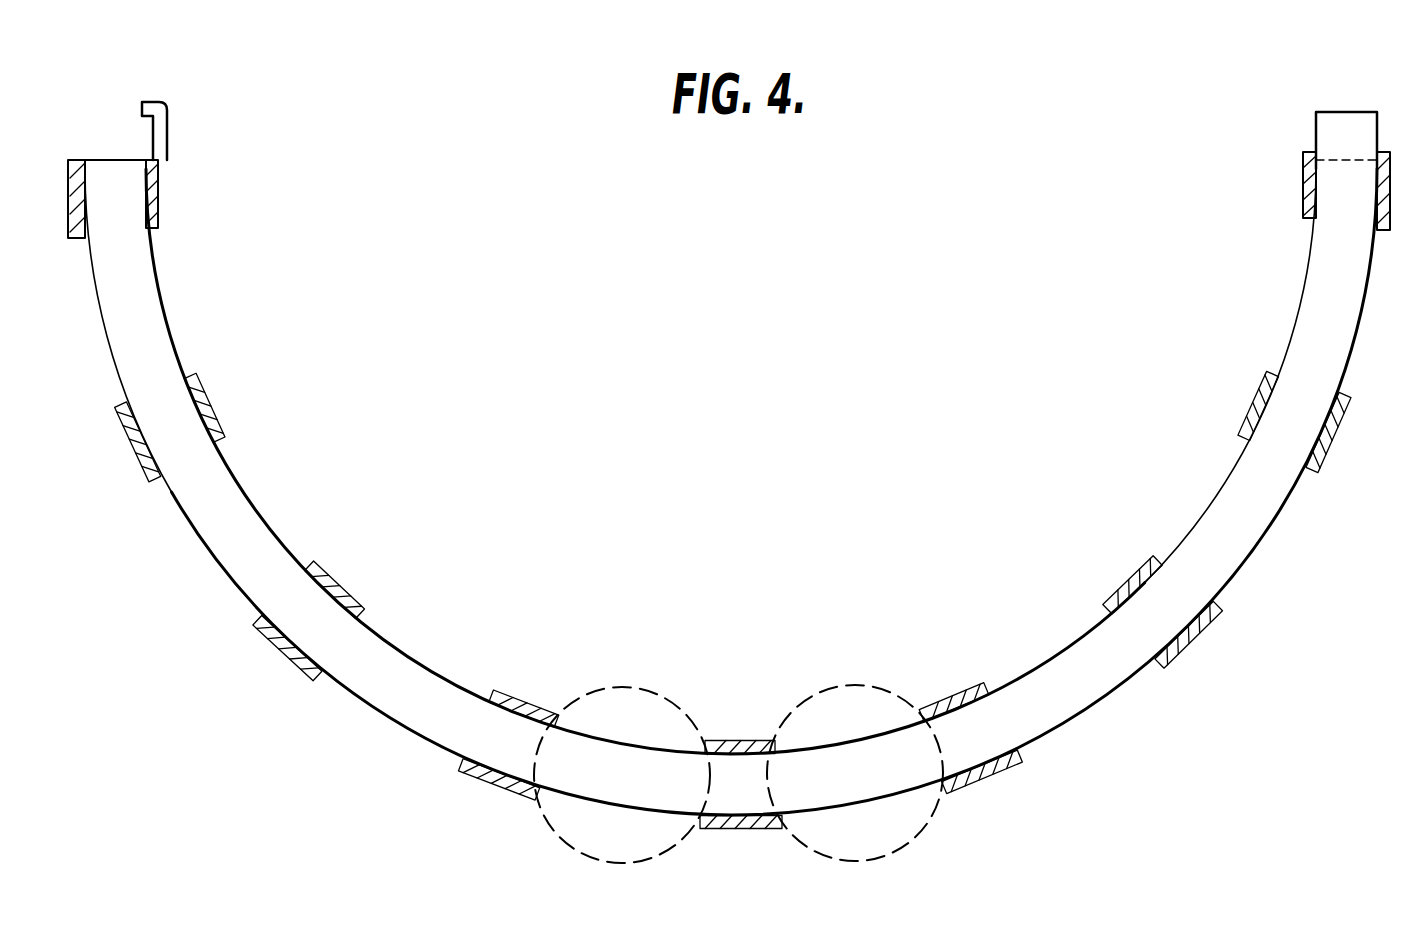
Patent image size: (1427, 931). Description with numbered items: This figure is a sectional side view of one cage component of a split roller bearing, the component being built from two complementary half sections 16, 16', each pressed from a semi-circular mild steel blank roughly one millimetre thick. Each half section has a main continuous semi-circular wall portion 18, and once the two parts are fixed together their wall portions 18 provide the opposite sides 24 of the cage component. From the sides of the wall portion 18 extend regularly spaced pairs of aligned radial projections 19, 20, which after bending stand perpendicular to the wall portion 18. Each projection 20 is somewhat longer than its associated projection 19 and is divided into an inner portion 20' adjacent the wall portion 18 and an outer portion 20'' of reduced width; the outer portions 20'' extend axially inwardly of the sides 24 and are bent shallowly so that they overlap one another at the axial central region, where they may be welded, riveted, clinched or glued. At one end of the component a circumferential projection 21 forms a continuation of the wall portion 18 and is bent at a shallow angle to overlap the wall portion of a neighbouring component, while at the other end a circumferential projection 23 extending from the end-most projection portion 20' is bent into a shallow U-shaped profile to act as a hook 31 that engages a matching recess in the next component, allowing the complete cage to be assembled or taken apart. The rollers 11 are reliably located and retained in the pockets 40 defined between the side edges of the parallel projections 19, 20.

The rollers 11 is at (637, 718).
The half section 16 is at (731, 492).
The half section 16' is at (731, 461).
The main continuous semi-circular wall portion 18 is at (150, 332).
The radial projection 19 is at (463, 762).
The radial projection 20 is at (731, 561).
The inner portion of projection 20' is at (913, 666).
The outer portion of projection 20'' is at (913, 666).
The circumferential projection 21 is at (1332, 125).
The circumferential projection 23 is at (157, 167).
The sides of cage component 24 is at (222, 498).
The hook 31 is at (163, 120).
The pocket 40 is at (557, 694).